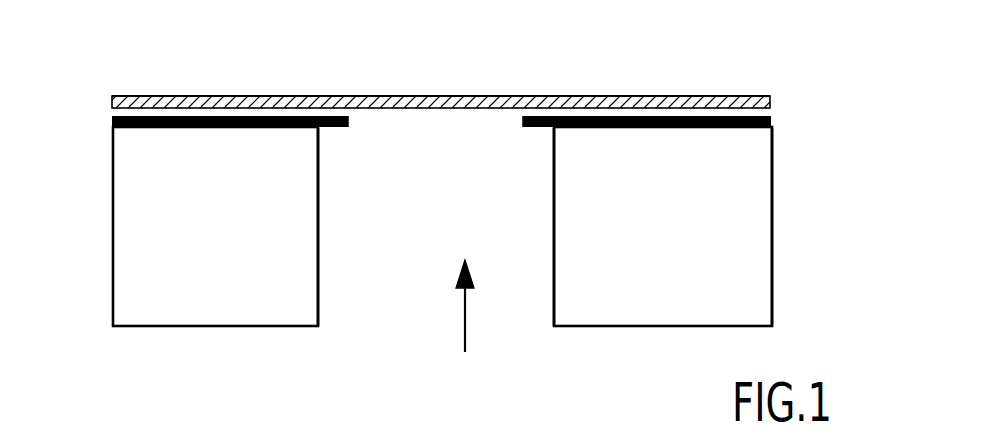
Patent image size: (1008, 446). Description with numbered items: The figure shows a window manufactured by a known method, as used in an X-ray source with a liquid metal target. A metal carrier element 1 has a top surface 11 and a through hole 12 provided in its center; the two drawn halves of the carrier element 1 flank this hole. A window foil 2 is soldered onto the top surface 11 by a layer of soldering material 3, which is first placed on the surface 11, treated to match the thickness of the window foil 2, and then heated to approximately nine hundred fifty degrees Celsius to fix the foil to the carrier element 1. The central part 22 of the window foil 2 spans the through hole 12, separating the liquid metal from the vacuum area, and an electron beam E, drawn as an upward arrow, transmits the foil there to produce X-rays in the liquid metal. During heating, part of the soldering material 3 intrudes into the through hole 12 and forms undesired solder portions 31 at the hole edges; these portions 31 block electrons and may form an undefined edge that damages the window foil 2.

The carrier element 1 is at (773, 220).
The top surface 11 is at (745, 128).
The through hole 12 is at (408, 157).
The window foil 2 is at (771, 102).
The central part of the window foil 22 is at (523, 96).
The soldering material 3 is at (112, 127).
The undesired solder portion 31 is at (341, 128).
The electron beam E is at (462, 335).